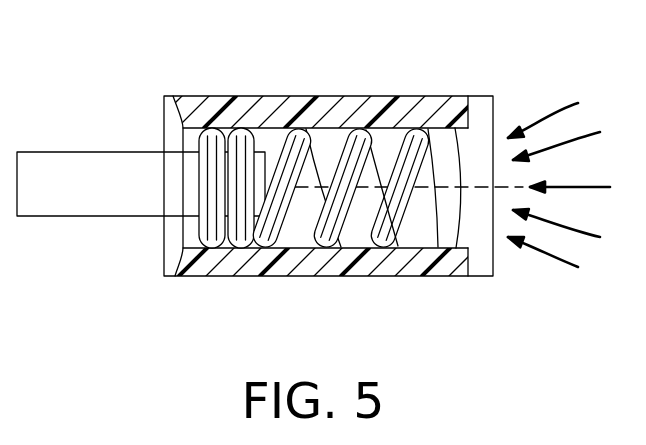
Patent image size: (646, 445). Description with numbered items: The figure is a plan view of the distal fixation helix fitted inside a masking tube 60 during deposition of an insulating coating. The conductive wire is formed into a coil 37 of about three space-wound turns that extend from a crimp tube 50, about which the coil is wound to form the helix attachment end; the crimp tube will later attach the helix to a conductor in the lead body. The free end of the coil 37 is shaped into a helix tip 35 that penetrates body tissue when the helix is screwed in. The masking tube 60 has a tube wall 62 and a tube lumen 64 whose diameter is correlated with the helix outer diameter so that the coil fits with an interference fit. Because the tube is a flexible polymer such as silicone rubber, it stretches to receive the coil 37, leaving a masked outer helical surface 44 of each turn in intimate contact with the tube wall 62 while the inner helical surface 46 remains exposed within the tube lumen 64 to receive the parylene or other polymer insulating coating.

The masking tube 60 is at (322, 70).
The tube wall 62 is at (450, 97).
The tube lumen 64 is at (275, 133).
The inner helical surface 46 is at (368, 162).
The coil 37 is at (298, 228).
The masked outer helical surface 44 is at (328, 233).
The helix tip 35 is at (447, 276).
The crimp tube 50 is at (53, 168).